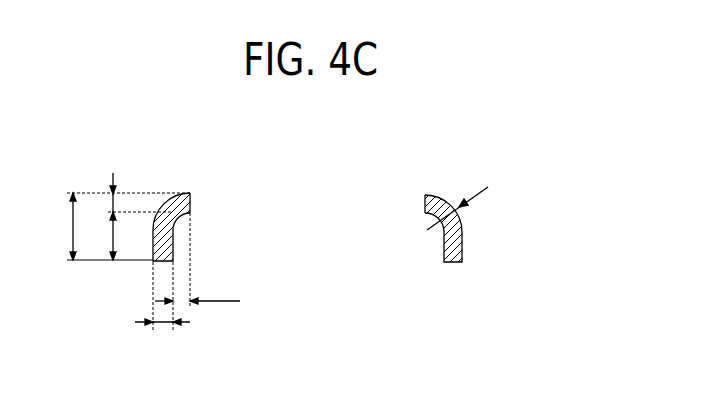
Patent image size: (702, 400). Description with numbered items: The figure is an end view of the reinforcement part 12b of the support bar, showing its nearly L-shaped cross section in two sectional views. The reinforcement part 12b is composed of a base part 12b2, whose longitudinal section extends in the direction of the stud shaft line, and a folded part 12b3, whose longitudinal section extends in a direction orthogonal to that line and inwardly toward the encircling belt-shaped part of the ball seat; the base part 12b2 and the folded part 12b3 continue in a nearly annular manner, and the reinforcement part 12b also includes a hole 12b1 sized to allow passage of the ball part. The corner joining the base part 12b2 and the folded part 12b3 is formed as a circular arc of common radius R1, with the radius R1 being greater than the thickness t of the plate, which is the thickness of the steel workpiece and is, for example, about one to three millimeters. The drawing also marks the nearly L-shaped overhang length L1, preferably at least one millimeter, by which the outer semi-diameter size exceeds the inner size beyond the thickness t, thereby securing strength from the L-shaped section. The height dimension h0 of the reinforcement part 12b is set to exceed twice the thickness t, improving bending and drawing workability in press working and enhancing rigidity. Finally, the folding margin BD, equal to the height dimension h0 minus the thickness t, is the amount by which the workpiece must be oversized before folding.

The reinforcement part 12b is at (461, 173).
The hole 12b1 is at (192, 202).
The base part 12b2 is at (163, 238).
The folded part 12b3 is at (173, 192).
The radius R1 is at (477, 201).
The thickness t is at (103, 198).
The height dimension h0 is at (54, 226).
The folding margin BD is at (110, 238).
The overhang length L1 is at (197, 288).